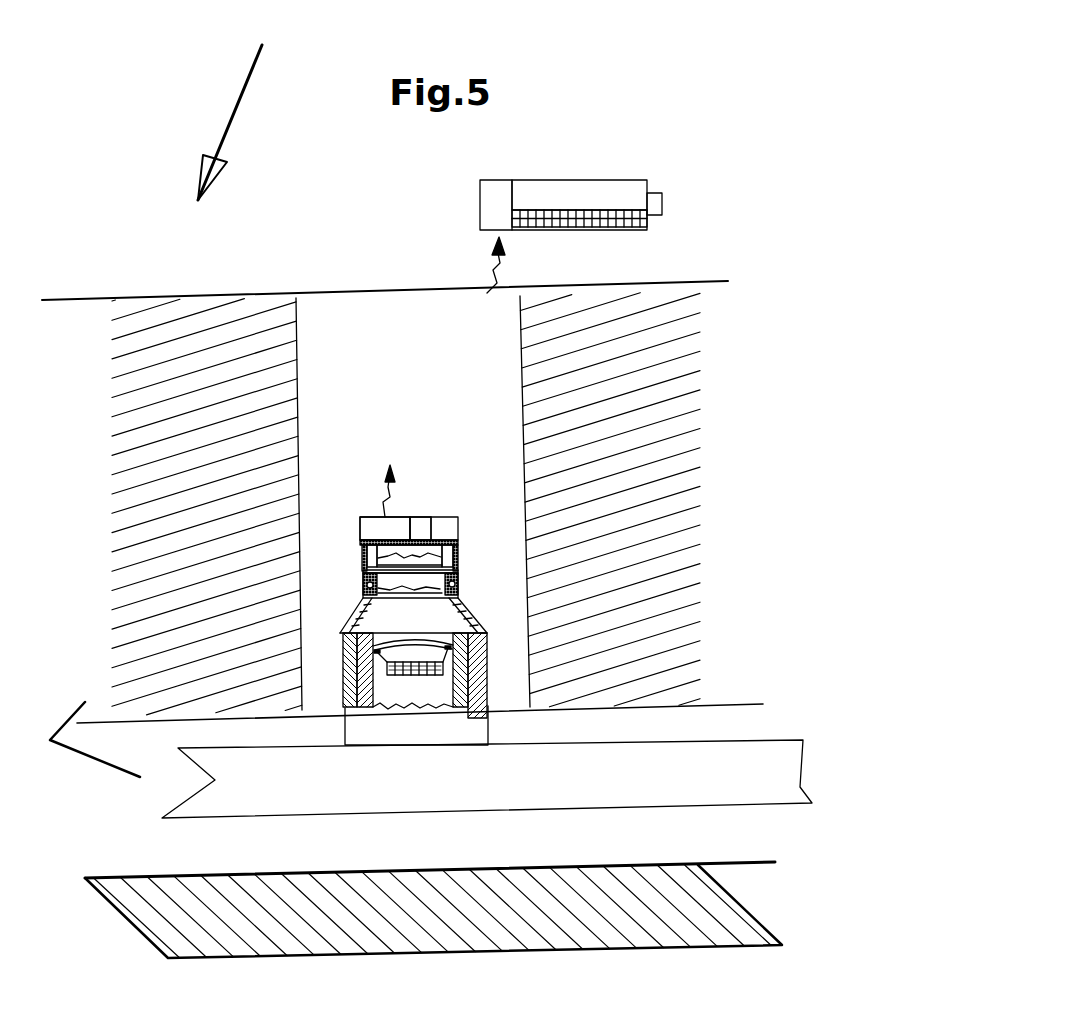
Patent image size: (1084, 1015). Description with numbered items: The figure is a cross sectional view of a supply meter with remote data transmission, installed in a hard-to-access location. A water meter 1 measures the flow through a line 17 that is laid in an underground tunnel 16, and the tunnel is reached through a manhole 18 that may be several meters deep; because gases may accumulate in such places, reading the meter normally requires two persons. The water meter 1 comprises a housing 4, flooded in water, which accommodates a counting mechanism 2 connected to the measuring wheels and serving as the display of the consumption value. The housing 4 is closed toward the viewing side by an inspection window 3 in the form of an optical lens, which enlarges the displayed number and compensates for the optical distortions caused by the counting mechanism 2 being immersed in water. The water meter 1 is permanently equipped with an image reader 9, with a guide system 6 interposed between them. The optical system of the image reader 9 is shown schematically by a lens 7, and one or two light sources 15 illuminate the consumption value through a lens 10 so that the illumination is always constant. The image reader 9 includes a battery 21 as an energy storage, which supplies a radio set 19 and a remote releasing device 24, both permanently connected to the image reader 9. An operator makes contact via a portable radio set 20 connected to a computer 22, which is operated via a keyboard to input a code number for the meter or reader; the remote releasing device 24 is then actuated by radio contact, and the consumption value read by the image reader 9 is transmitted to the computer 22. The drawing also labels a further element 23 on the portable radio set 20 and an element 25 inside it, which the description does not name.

The water meter 1 is at (424, 739).
The counting mechanism 2 is at (448, 662).
The inspection window 3 is at (392, 640).
The housing 4 is at (353, 680).
The guide system 6 is at (478, 618).
The lens 7 is at (410, 585).
The image reader 9 is at (457, 542).
The lens 10 is at (452, 592).
The light source 15 is at (456, 575).
The underground tunnel 16 is at (91, 719).
The line 17 is at (723, 773).
The manhole 18 is at (443, 418).
The radio set 19 is at (375, 530).
The portable radio set 20 is at (497, 210).
The battery 21 is at (421, 527).
The computer 22 is at (555, 198).
The connector 23 is at (657, 212).
The remote releasing device 24 is at (447, 527).
The antenna coil 25 is at (565, 215).